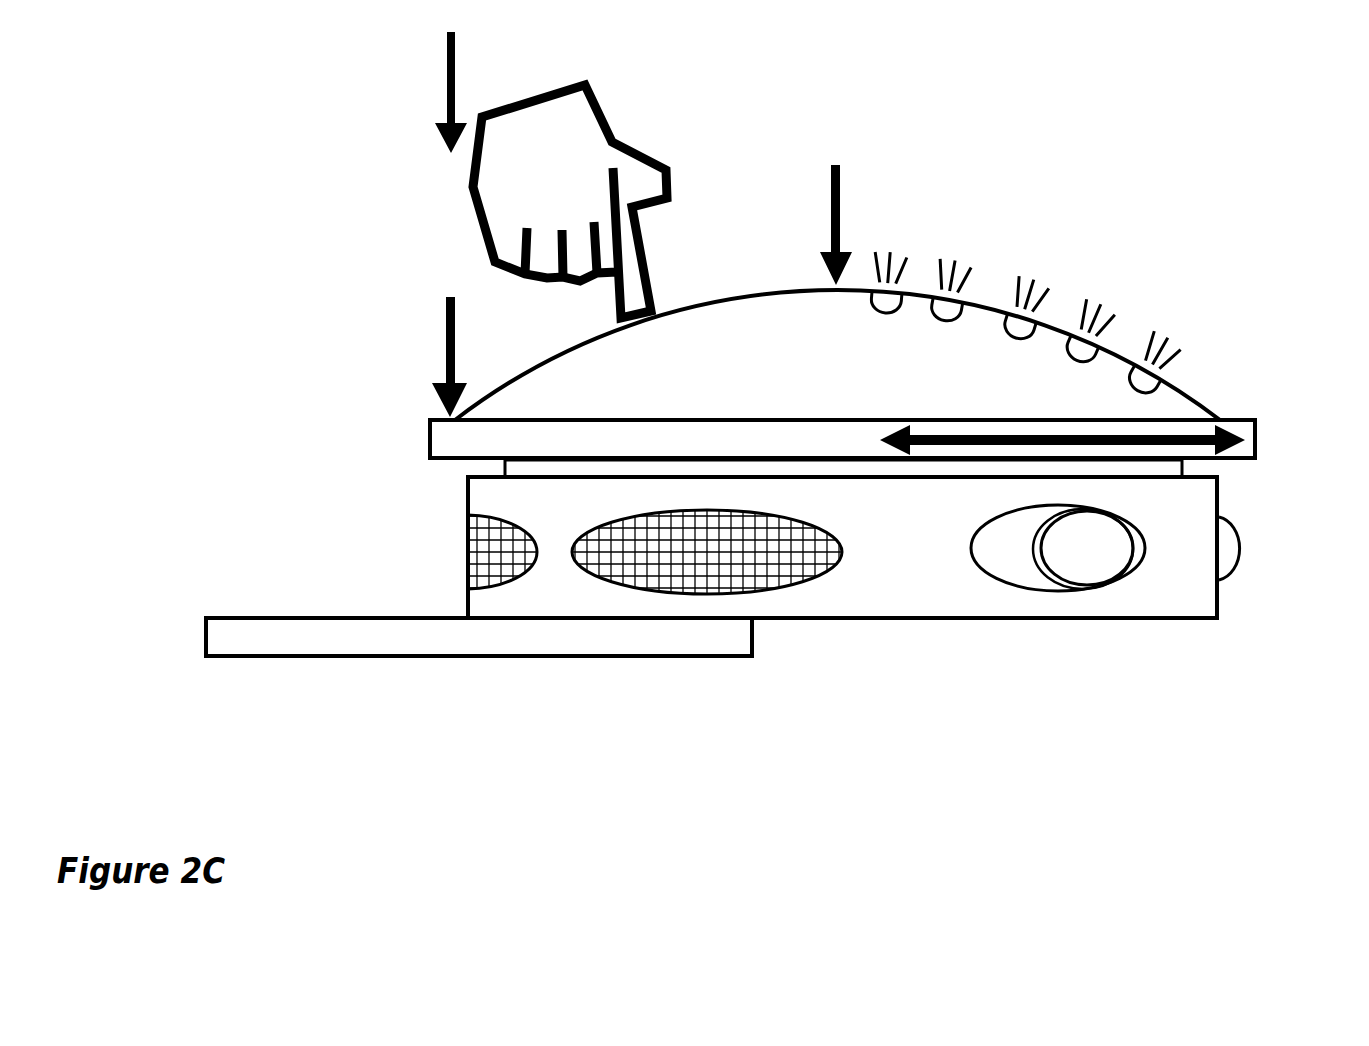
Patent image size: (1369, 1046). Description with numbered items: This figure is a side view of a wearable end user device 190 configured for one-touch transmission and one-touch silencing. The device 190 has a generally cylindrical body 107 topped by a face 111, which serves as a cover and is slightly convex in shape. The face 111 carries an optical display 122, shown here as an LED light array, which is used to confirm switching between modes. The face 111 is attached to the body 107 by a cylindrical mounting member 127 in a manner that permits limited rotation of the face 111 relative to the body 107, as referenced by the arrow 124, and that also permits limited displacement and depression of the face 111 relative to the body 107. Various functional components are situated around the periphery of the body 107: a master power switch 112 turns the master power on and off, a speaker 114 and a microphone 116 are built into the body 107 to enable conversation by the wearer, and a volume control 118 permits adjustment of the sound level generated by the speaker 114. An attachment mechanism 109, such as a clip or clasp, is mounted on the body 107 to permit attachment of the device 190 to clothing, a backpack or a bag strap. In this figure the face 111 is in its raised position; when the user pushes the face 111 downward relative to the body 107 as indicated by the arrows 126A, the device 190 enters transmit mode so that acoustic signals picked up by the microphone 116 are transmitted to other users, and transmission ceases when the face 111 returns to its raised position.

The end user device 190 is at (319, 209).
The arrows indicating depression of face 126A is at (445, 343).
The face 111 is at (596, 339).
The optical display 122 is at (1083, 257).
The arrow indicating rotation of face 124 is at (1167, 437).
The cylindrical mounting member 127 is at (503, 472).
The body 107 is at (1190, 620).
The microphone 116 is at (537, 567).
The speaker 114 is at (795, 585).
The master power switch 112 is at (1038, 550).
The volume control 118 is at (1233, 527).
The attachment mechanism 109 is at (451, 658).